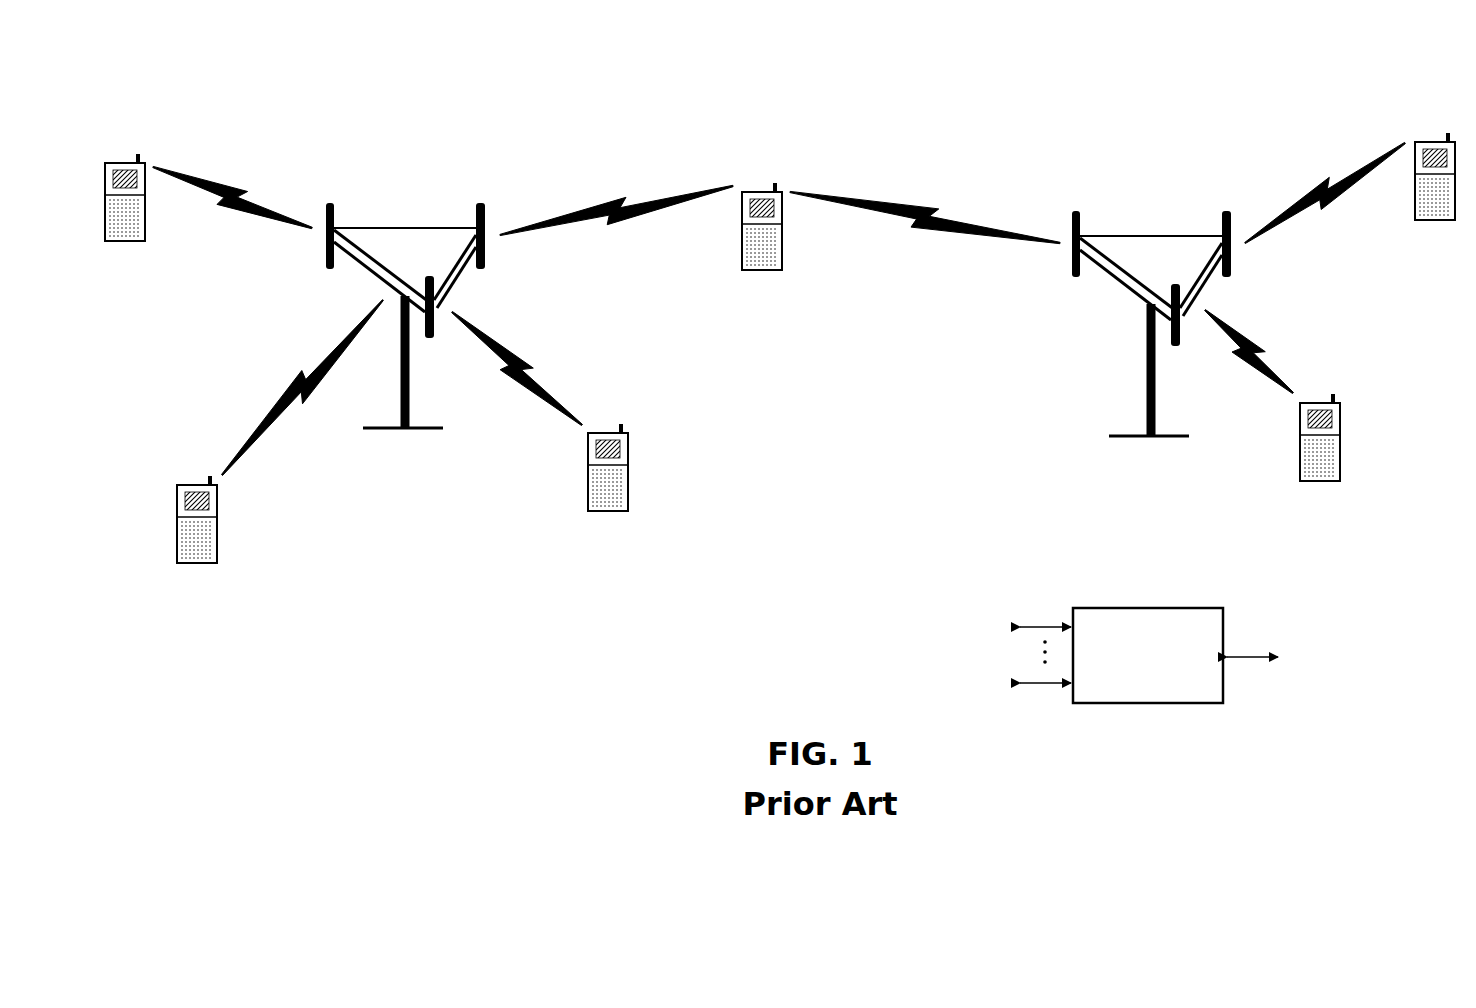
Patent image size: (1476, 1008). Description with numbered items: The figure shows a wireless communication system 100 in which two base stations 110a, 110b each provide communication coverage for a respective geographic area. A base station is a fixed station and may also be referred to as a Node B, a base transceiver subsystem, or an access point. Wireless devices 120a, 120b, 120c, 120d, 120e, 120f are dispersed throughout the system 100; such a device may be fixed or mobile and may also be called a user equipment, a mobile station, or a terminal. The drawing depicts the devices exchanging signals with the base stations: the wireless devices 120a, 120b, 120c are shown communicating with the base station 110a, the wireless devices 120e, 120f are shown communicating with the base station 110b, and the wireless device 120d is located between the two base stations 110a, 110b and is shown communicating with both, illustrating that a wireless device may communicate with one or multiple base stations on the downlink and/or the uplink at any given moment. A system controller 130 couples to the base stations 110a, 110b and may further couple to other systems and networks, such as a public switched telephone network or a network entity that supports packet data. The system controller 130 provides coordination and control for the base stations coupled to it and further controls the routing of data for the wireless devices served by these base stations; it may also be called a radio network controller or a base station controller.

The wireless communication system 100 is at (1203, 56).
The base station 110a is at (414, 212).
The base station 110b is at (1160, 220).
The wireless device 120a is at (134, 160).
The wireless device 120b is at (206, 482).
The wireless device 120c is at (616, 421).
The wireless device 120d is at (770, 181).
The wireless device 120e is at (1330, 391).
The wireless device 120f is at (1442, 129).
The system controller 130 is at (1140, 606).